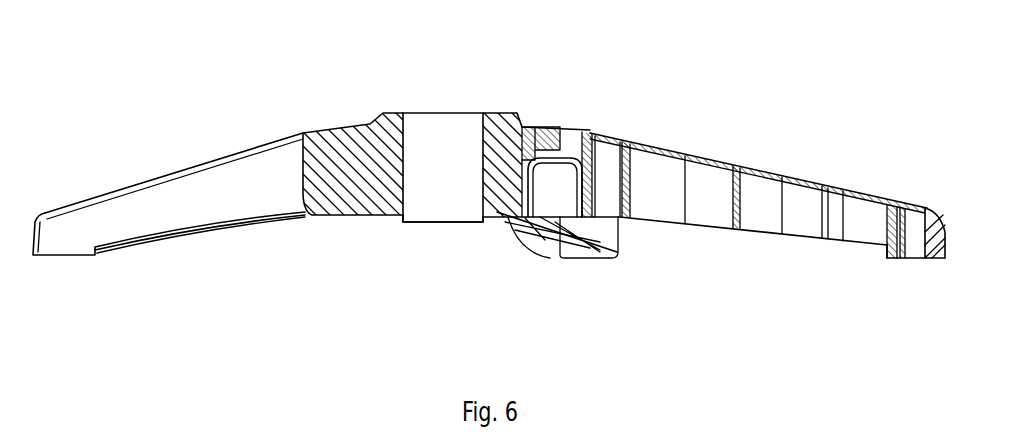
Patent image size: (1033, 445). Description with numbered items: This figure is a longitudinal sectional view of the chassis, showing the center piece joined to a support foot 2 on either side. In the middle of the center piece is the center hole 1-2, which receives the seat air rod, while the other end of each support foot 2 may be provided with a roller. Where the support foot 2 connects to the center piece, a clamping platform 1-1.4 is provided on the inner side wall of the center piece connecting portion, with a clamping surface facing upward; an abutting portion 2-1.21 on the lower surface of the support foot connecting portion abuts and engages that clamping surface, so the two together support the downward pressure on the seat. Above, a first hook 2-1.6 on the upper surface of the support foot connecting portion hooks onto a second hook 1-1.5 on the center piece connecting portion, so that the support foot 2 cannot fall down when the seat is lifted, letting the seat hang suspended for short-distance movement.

The support foot 2 is at (178, 157).
The center hole 1-2 is at (428, 120).
The second hook 1-1.5 is at (557, 130).
The first hook 2-1.6 is at (598, 103).
The clamping platform 1-1.4 is at (493, 222).
The abutting portion 2-1.21 is at (525, 240).